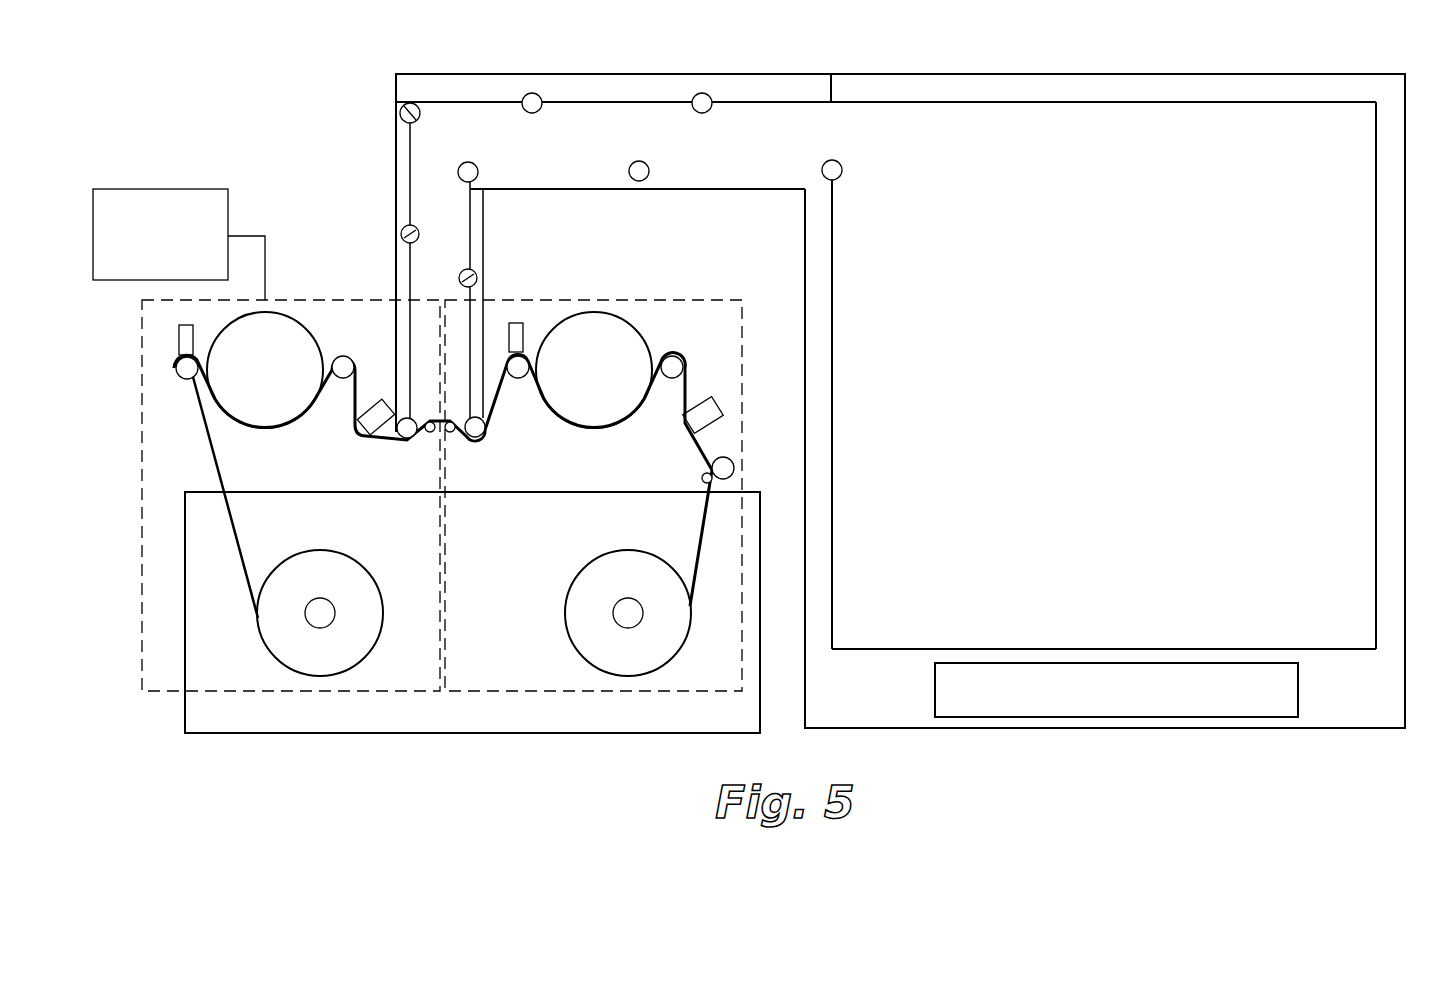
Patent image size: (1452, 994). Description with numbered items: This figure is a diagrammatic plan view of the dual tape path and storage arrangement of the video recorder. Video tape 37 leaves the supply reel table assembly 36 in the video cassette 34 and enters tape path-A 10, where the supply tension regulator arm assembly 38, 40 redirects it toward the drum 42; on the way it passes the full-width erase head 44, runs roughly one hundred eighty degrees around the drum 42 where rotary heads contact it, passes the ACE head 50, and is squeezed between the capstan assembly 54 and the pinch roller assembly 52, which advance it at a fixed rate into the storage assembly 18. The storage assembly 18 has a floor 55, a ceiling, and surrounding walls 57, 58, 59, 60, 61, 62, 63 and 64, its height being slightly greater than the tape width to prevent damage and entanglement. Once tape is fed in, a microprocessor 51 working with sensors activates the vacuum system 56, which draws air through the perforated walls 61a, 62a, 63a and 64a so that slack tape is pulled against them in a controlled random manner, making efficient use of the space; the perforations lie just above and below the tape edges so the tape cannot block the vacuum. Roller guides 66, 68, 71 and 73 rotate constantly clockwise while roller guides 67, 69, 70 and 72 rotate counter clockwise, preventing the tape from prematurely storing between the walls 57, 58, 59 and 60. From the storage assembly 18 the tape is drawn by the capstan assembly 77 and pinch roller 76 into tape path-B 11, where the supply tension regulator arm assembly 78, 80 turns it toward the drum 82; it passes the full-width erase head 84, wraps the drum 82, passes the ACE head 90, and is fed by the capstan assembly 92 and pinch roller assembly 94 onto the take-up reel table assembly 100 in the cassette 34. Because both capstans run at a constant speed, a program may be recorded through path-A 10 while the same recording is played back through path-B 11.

The tape path-A 10 is at (140, 413).
The tape path-B 11 is at (656, 298).
The storage assembly 18 is at (880, 707).
The video cassette 34 is at (573, 490).
The supply reel table assembly 36 is at (357, 563).
The video tape 37 is at (205, 465).
The supply tension regulator arm assembly 38 is at (180, 375).
The supply tension regulator arm assembly 40 is at (344, 378).
The drum 42 is at (265, 370).
The full-width erase head 44 is at (178, 345).
The ACE head 50 is at (378, 404).
The microprocessor 51 is at (179, 244).
The pinch roller assembly 52 is at (428, 436).
The capstan assembly 54 is at (413, 418).
The floor 55 is at (1278, 118).
The vacuum system 56 is at (1300, 703).
The wall 57 is at (394, 278).
The wall 58 is at (486, 280).
The wall 59 is at (637, 209).
The wall 60 is at (560, 73).
The wall 61 is at (1020, 73).
The perforated wall 61a is at (1030, 103).
The wall 62 is at (1408, 390).
The perforated wall 62a is at (1373, 388).
The wall 63 is at (1070, 730).
The perforated wall 63a is at (1065, 648).
The wall 64 is at (803, 305).
The perforated wall 64a is at (836, 312).
The roller guide 66 is at (840, 162).
The roller guide 67 is at (708, 112).
The roller guide 68 is at (645, 162).
The roller guide 69 is at (537, 112).
The roller guide 70 is at (415, 118).
The roller guide 71 is at (474, 162).
The roller guide 72 is at (417, 228).
The roller guide 73 is at (461, 280).
The pinch roller 76 is at (452, 436).
The capstan assembly 77 is at (467, 418).
The supply tension regulator arm assembly 78 is at (518, 380).
The supply tension regulator arm assembly 80 is at (672, 380).
The drum 82 is at (594, 370).
The full-width erase head 84 is at (520, 322).
The ACE head 90 is at (703, 402).
The capstan assembly 92 is at (701, 477).
The pinch roller assembly 94 is at (733, 462).
The take-up reel table assembly 100 is at (595, 564).